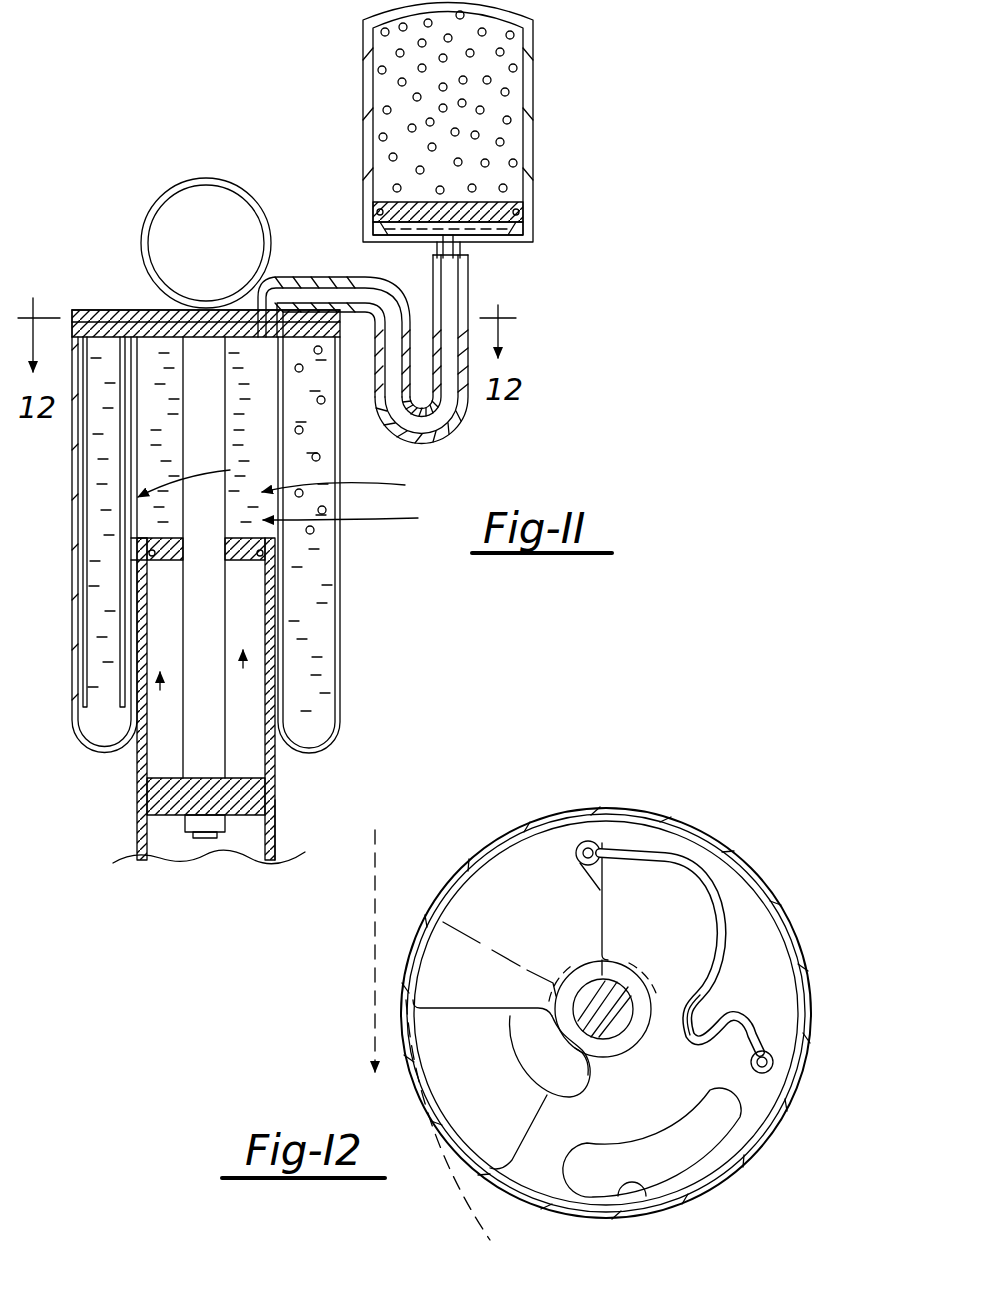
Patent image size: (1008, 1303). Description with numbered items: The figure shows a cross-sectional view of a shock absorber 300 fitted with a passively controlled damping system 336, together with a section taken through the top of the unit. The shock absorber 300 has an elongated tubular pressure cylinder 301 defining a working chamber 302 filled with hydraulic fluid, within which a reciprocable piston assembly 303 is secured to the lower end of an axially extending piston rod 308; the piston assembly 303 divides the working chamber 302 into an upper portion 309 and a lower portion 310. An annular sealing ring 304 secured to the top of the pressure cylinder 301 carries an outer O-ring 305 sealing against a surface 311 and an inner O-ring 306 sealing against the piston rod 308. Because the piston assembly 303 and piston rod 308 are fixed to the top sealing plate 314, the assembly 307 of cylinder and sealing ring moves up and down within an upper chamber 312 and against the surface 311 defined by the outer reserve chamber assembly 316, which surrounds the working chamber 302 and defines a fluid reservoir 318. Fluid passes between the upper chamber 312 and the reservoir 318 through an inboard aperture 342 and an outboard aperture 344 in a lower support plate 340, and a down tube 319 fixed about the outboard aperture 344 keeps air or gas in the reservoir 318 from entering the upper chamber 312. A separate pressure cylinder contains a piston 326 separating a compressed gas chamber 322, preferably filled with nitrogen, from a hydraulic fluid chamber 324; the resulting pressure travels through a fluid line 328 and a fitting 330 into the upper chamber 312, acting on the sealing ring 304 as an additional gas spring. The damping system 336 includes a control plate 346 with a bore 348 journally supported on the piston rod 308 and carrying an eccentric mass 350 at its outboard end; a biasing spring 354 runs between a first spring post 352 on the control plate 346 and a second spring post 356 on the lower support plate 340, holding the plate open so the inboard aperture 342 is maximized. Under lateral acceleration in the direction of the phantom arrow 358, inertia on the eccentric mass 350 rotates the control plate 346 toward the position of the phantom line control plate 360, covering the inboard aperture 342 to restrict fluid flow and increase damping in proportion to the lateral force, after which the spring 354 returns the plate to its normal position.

In FIG. 11, the shock absorber 300 is at (95, 182).
In FIG. 11, the pressure cylinder 301 is at (138, 765).
In FIG. 11, the working chamber 302 is at (77, 717).
In FIG. 12, the working chamber 302 is at (712, 833).
In FIG. 11, the piston assembly 303 is at (148, 820).
In FIG. 11, the annular sealing ring 304 is at (140, 587).
In FIG. 11, the outer O-ring 305 is at (133, 568).
In FIG. 11, the inner O-ring 306 is at (273, 560).
In FIG. 11, the assembly of cylinder and annular sealing ring 307 is at (300, 688).
In FIG. 11, the piston rod 308 is at (200, 655).
In FIG. 12, the piston rod 308 is at (618, 993).
In FIG. 11, the upper portion of the working chamber 309 is at (276, 748).
In FIG. 11, the lower portion of the working chamber 310 is at (250, 835).
In FIG. 11, the surface 311 is at (302, 485).
In FIG. 11, the upper chamber 312 is at (359, 484).
In FIG. 12, the upper chamber 312 is at (560, 1095).
In FIG. 11, the top sealing plate 314 is at (130, 310).
In FIG. 11, the outer reserve chamber assembly 316 is at (70, 500).
In FIG. 11, the fluid reservoir 318 is at (102, 530).
In FIG. 12, the fluid reservoir 318 is at (715, 1140).
In FIG. 11, the down tube 319 is at (135, 553).
In FIG. 11, the compressed gas chamber 322 is at (510, 75).
In FIG. 11, the hydraulic fluid chamber 324 is at (520, 245).
In FIG. 11, the piston 326 is at (500, 205).
In FIG. 11, the fluid line 328 is at (465, 440).
In FIG. 11, the fitting 330 is at (262, 312).
In FIG. 11, the passively controlled damping system 336 is at (103, 316).
In FIG. 12, the passively controlled damping system 336 is at (548, 855).
In FIG. 11, the lower support plate 340 is at (243, 340).
In FIG. 12, the lower support plate 340 is at (738, 907).
In FIG. 11, the inboard aperture 342 is at (162, 310).
In FIG. 12, the inboard aperture 342 is at (580, 1072).
In FIG. 11, the outboard aperture 344 is at (85, 312).
In FIG. 12, the outboard aperture 344 is at (645, 1190).
In FIG. 12, the control plate 346 is at (490, 900).
In FIG. 12, the bore 348 is at (612, 977).
In FIG. 12, the eccentric mass 350 is at (602, 832).
In FIG. 12, the first spring post 352 is at (600, 853).
In FIG. 12, the biasing spring 354 is at (717, 962).
In FIG. 12, the second spring post 356 is at (765, 1043).
In FIG. 11, the phantom direction arrow 358 is at (350, 1010).
In FIG. 12, the phantom line control plate 360 is at (488, 1232).